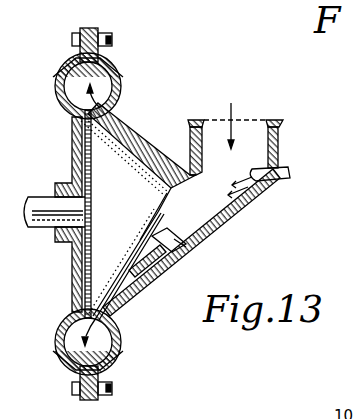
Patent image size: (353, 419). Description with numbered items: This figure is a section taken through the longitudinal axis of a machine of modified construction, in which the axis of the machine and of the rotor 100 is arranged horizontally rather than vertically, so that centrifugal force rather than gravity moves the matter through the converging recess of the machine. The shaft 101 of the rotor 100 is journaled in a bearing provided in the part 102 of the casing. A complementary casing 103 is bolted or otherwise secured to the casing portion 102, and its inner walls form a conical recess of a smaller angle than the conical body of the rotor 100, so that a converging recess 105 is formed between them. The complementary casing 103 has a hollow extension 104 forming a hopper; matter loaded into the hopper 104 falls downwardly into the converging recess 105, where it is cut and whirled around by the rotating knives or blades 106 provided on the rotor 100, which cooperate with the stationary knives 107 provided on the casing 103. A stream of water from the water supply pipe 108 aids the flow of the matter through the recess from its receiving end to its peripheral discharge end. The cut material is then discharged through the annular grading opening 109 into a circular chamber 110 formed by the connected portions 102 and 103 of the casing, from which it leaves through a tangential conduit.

The rotor 100 is at (143, 289).
The shaft 101 is at (43, 223).
The casing part 102 is at (60, 73).
The complementary casing 103 is at (122, 88).
The hollow extension 104 is at (279, 145).
The converging recess 105 is at (180, 262).
The rotating knives or blades 106 is at (135, 160).
The stationary knives 107 is at (181, 122).
The water supply pipe 108 is at (280, 179).
The annular grading opening 109 is at (100, 321).
The circular chamber 110 is at (97, 70).